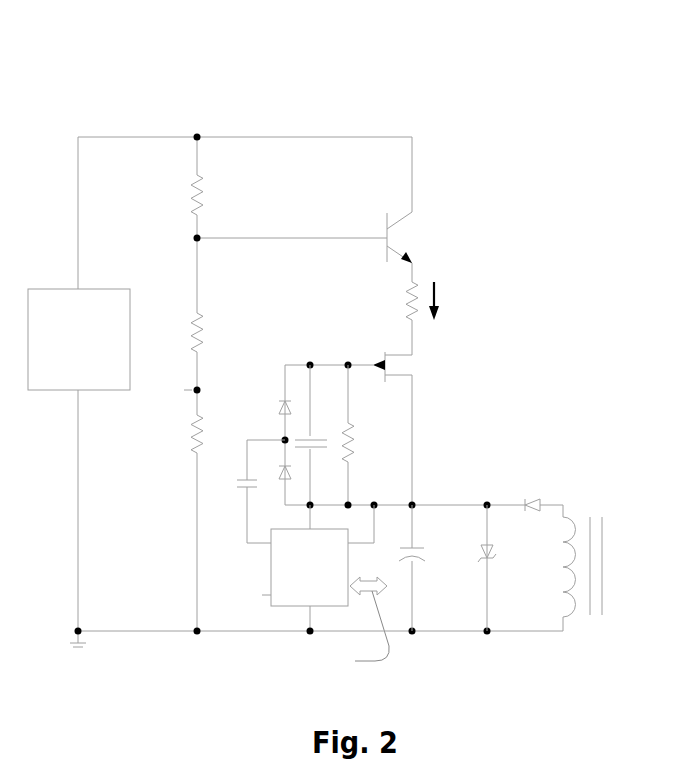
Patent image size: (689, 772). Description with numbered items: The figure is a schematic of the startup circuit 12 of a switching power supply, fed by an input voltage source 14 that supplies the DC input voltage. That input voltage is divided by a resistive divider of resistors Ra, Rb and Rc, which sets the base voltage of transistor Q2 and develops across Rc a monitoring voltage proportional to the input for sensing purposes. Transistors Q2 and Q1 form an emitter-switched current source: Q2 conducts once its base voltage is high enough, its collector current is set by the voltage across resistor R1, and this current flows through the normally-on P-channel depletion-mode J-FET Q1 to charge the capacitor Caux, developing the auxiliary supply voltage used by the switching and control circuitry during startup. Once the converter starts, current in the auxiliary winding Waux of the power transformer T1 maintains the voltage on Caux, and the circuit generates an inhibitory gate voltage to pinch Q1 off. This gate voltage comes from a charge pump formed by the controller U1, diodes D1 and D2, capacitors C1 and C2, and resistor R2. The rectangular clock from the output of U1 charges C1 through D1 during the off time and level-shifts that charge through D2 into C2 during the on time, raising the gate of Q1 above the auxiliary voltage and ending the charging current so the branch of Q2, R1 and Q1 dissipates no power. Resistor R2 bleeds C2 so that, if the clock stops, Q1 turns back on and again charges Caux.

The startup circuit 12 is at (537, 49).
The input voltage source 14 is at (79, 339).
The transistor Q1 is at (406, 365).
The transistor Q2 is at (412, 237).
The resistor Ra is at (208, 195).
The resistor Rb is at (208, 332).
The resistor Rc is at (207, 434).
The resistor R1 is at (399, 301).
The resistor R2 is at (361, 442).
The capacitor C1 is at (239, 494).
The capacitor C2 is at (315, 433).
The diode D1 is at (274, 466).
The diode D2 is at (274, 408).
The controller U1 is at (309, 567).
The capacitor Caux is at (431, 553).
The power transformer T1 is at (556, 565).
The auxiliary winding Waux is at (567, 618).